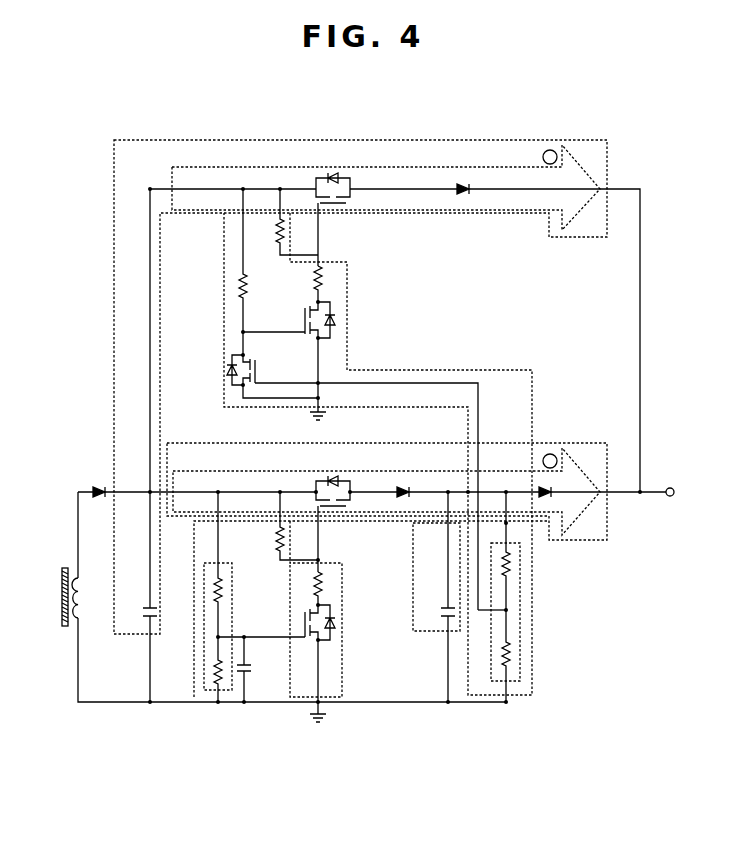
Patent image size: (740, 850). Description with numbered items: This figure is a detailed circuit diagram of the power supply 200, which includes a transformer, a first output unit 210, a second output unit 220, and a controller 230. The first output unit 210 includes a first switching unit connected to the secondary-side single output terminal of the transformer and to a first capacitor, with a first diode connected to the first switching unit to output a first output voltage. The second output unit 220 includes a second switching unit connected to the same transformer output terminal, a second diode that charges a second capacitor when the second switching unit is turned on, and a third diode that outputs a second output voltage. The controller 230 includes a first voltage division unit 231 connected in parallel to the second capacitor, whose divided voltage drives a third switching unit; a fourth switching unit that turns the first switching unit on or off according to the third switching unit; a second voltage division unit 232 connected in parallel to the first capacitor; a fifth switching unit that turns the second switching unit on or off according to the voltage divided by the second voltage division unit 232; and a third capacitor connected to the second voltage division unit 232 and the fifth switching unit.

The power supply 200 is at (86, 119).
The first output unit 210 is at (113, 275).
The second output unit 220 is at (578, 545).
The controller 230 is at (330, 705).
The first voltage division unit 231 is at (520, 622).
The second voltage division unit 232 is at (232, 583).